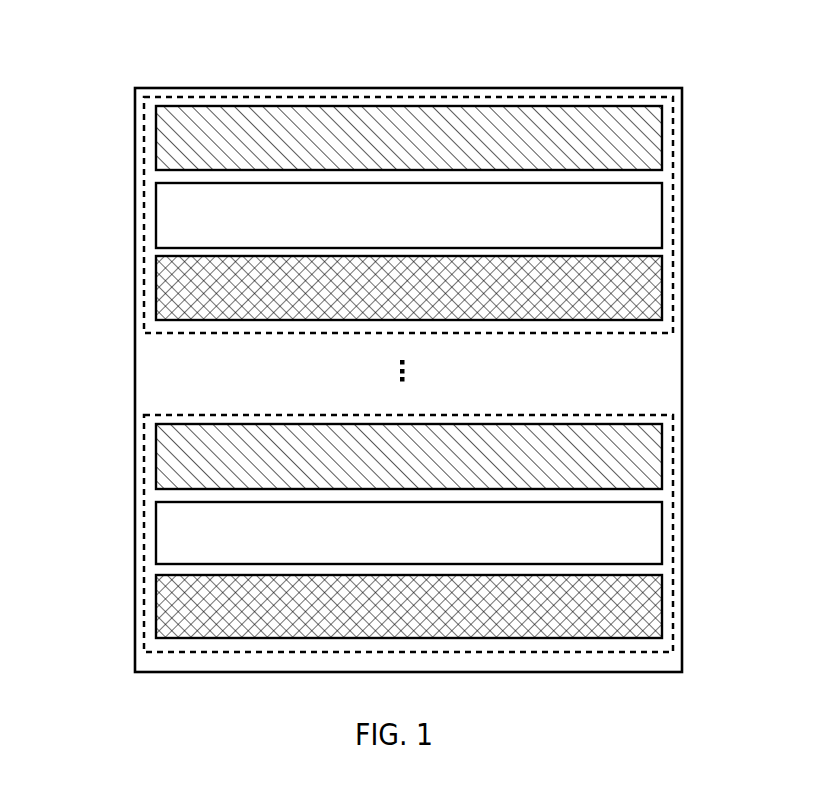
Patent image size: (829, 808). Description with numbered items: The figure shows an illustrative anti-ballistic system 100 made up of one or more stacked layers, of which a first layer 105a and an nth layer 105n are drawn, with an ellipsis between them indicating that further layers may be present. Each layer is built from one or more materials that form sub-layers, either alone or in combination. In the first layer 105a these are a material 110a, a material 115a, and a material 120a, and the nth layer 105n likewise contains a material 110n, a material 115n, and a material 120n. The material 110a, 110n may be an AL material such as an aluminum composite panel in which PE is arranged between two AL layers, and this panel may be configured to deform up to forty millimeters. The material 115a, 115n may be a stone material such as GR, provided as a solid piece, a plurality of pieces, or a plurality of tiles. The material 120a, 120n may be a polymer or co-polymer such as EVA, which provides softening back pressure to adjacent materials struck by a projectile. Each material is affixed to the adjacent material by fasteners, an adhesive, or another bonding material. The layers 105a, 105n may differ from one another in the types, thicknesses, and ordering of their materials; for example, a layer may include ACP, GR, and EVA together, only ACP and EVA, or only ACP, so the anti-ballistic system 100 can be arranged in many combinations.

The anti-ballistic system 100 is at (672, 88).
The layer 105a is at (144, 104).
The layer 105n is at (144, 418).
The material 110a is at (156, 163).
The material 110n is at (156, 478).
The material 115a is at (156, 238).
The material 115n is at (156, 552).
The material 120a is at (156, 313).
The material 120n is at (156, 630).